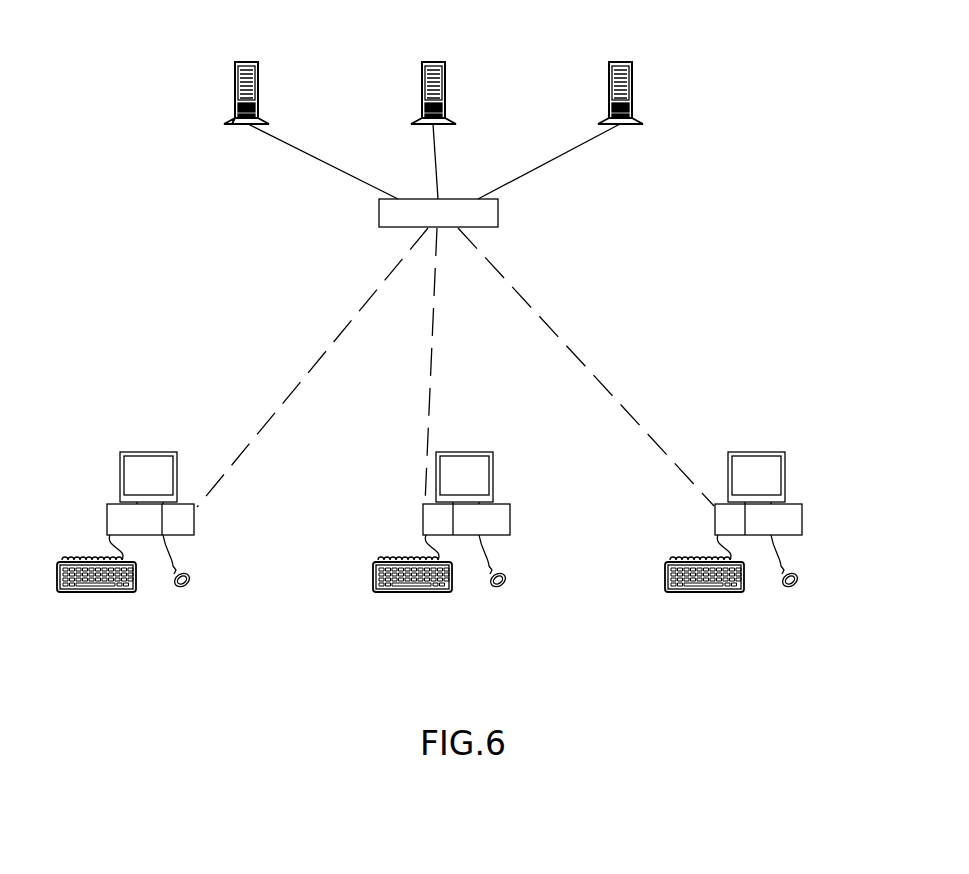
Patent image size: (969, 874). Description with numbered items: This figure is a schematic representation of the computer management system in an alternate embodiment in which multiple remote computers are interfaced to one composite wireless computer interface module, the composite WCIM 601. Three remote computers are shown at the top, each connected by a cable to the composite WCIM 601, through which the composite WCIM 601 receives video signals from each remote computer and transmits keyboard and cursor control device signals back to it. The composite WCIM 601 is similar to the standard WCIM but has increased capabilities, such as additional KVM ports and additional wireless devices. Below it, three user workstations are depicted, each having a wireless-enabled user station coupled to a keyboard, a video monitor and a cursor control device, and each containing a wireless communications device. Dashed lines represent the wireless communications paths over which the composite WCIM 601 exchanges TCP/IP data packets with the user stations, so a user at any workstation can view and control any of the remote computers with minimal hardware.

The composite WCIM 601 is at (438, 213).